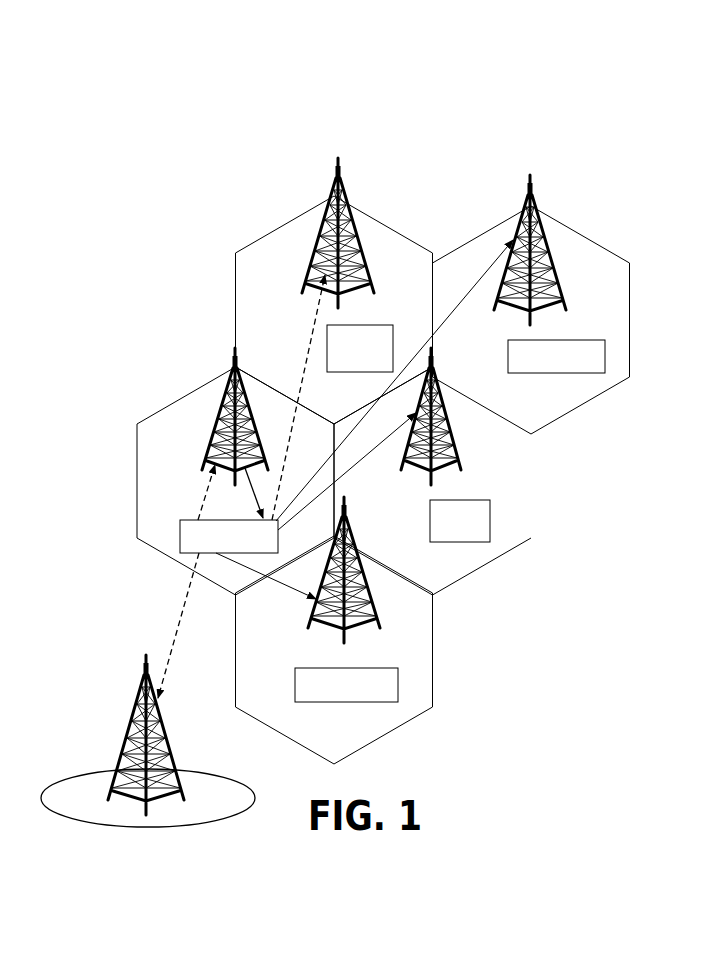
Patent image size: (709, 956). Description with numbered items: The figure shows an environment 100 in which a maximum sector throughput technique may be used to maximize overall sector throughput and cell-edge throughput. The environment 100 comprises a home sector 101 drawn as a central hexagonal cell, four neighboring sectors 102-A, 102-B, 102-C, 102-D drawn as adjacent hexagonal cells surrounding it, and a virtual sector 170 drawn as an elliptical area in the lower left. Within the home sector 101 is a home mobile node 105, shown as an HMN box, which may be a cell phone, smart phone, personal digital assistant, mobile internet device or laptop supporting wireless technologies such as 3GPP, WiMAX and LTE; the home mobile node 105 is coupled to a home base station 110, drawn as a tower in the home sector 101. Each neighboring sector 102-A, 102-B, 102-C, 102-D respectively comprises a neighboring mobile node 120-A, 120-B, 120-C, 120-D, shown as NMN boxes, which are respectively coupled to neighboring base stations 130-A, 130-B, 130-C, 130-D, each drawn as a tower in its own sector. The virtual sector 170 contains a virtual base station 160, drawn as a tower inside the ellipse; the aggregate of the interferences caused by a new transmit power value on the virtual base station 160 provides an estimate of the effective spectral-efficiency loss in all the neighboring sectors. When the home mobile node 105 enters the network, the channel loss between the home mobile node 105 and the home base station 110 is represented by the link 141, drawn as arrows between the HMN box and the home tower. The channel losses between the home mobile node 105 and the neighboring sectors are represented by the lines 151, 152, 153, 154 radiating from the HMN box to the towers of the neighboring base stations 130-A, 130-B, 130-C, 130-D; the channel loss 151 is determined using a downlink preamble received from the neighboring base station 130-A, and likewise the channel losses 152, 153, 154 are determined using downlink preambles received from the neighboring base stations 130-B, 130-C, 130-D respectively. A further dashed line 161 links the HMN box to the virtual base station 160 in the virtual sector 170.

The environment 100 is at (215, 118).
The home sector 101 is at (137, 456).
The neighboring sector 102-A is at (407, 722).
The neighboring sector 102-B is at (470, 572).
The neighboring sector 102-C is at (238, 296).
The neighboring sector 102-D is at (630, 292).
The home mobile node 105 is at (264, 545).
The home base station 110 is at (223, 402).
The neighboring mobile node 120-A is at (386, 693).
The neighboring mobile node 120-B is at (439, 538).
The neighboring mobile node 120-C is at (339, 365).
The neighboring mobile node 120-D is at (596, 365).
The neighboring base station 130-A is at (378, 612).
The neighboring base station 130-B is at (455, 437).
The neighboring base station 130-C is at (333, 182).
The neighboring base station 130-D is at (531, 183).
The channel loss 141 is at (203, 496).
The channel loss 151 is at (295, 593).
The channel loss 152 is at (357, 465).
The channel loss 153 is at (312, 333).
The channel loss 154 is at (473, 289).
The virtual base station 160 is at (130, 732).
The link between HMN and VBS 161 is at (185, 610).
The virtual sector 170 is at (88, 808).